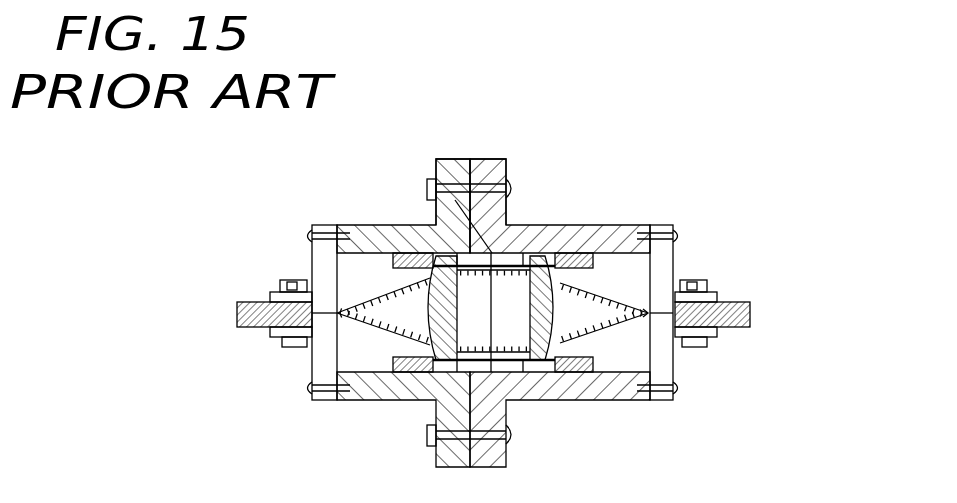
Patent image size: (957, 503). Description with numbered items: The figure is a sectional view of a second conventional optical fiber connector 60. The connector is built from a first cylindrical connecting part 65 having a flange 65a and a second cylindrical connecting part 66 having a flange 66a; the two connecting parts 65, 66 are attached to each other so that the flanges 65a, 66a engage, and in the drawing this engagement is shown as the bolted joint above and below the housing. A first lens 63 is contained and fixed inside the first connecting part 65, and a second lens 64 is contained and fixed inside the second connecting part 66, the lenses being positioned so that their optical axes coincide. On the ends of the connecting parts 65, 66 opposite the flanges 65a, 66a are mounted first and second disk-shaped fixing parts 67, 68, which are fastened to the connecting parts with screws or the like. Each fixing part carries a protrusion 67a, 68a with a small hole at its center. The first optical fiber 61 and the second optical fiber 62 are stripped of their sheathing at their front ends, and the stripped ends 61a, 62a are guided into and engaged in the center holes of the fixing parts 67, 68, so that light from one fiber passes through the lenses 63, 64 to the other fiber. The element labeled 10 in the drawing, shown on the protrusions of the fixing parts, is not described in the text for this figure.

The ferrule 10 is at (278, 288).
The second conventional optical fiber connector 60 is at (603, 136).
The first optical fiber 61 is at (237, 318).
The end of first optical fiber 61a is at (325, 305).
The second optical fiber 62 is at (750, 318).
The end of second optical fiber 62a is at (660, 312).
The first lens 63 is at (430, 400).
The second lens 64 is at (530, 387).
The first cylindrical connecting part 65 is at (383, 232).
The flange of first connecting part 65a is at (452, 160).
The second cylindrical connecting part 66 is at (605, 230).
The flange of second connecting part 66a is at (483, 160).
The first disk-shaped fixing part 67 is at (320, 362).
The protrusion of first fixing part 67a is at (273, 297).
The second disk-shaped fixing part 68 is at (670, 360).
The protrusion of second fixing part 68a is at (717, 297).